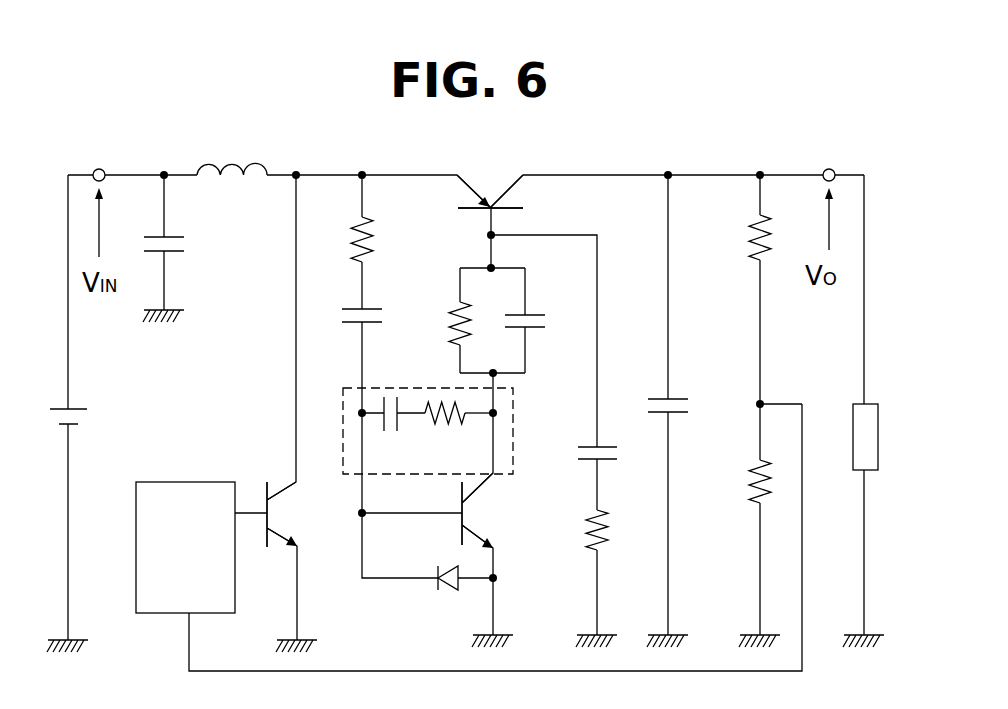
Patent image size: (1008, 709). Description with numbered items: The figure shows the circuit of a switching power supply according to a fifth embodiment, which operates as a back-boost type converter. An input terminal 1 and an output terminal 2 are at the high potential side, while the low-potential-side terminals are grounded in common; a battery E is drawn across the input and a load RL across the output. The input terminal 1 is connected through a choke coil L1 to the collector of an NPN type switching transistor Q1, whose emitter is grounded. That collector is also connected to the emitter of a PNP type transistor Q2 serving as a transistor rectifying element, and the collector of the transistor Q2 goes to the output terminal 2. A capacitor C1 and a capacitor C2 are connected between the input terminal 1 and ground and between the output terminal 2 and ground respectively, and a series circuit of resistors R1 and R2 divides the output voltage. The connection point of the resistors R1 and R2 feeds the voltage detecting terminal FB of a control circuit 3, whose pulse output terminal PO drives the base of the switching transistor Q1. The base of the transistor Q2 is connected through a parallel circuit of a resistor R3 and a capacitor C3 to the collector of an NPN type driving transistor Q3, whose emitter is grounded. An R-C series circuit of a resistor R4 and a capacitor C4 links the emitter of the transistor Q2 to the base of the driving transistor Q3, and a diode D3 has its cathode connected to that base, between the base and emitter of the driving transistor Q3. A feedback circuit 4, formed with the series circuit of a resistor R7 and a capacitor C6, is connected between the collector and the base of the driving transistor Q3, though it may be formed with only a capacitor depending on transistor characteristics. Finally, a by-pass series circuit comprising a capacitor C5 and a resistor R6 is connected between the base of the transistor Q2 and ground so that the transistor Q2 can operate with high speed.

The input terminal 1 is at (102, 169).
The output terminal 2 is at (826, 168).
The control circuit 3 is at (208, 482).
The feedback circuit 4 is at (412, 400).
The choke coil L1 is at (232, 153).
The capacitor C1 is at (184, 242).
The battery E is at (78, 433).
The switching transistor Q1 is at (303, 514).
The transistor rectifying element Q2 is at (516, 199).
The driving transistor Q3 is at (504, 510).
The resistor R1 is at (735, 247).
The resistor R2 is at (739, 481).
The resistor R3 is at (438, 331).
The resistor R4 is at (384, 239).
The resistor R6 is at (621, 541).
The resistor R7 is at (459, 437).
The capacitor C2 is at (653, 391).
The capacitor C3 is at (540, 341).
The capacitor C4 is at (380, 297).
The capacitor C5 is at (614, 473).
The capacitor C6 is at (393, 435).
The diode D3 is at (435, 599).
The load resistor RL is at (850, 440).